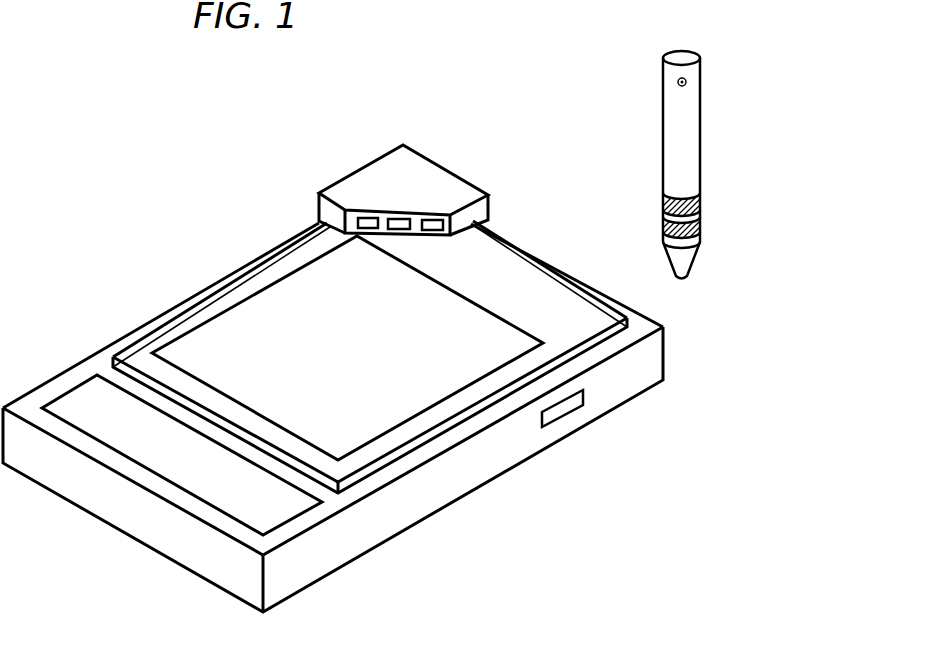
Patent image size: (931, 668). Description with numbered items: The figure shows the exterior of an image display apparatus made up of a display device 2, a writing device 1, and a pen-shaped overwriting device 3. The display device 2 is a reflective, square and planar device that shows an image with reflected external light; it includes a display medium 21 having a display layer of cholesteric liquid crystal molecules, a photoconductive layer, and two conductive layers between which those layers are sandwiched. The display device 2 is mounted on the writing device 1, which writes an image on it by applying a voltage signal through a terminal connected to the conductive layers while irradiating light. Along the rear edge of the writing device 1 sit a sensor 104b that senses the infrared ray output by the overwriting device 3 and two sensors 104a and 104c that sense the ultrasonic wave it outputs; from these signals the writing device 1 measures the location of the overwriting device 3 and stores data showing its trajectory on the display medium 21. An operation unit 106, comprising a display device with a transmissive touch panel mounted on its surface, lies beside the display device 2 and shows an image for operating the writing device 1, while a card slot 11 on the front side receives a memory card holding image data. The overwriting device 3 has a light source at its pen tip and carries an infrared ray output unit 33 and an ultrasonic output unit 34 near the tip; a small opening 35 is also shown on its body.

The writing device 1 is at (460, 504).
The display device 2 is at (530, 270).
The overwriting device 3 is at (626, 159).
The card slot 11 is at (557, 412).
The display medium 21 is at (243, 310).
The infrared ray output unit 33 is at (663, 224).
The ultrasonic output unit 34 is at (663, 193).
The pen hole / button 35 is at (680, 81).
The sensor 104a is at (367, 218).
The sensor 104b is at (398, 222).
The sensor 104c is at (437, 223).
The operation unit 106 is at (93, 398).